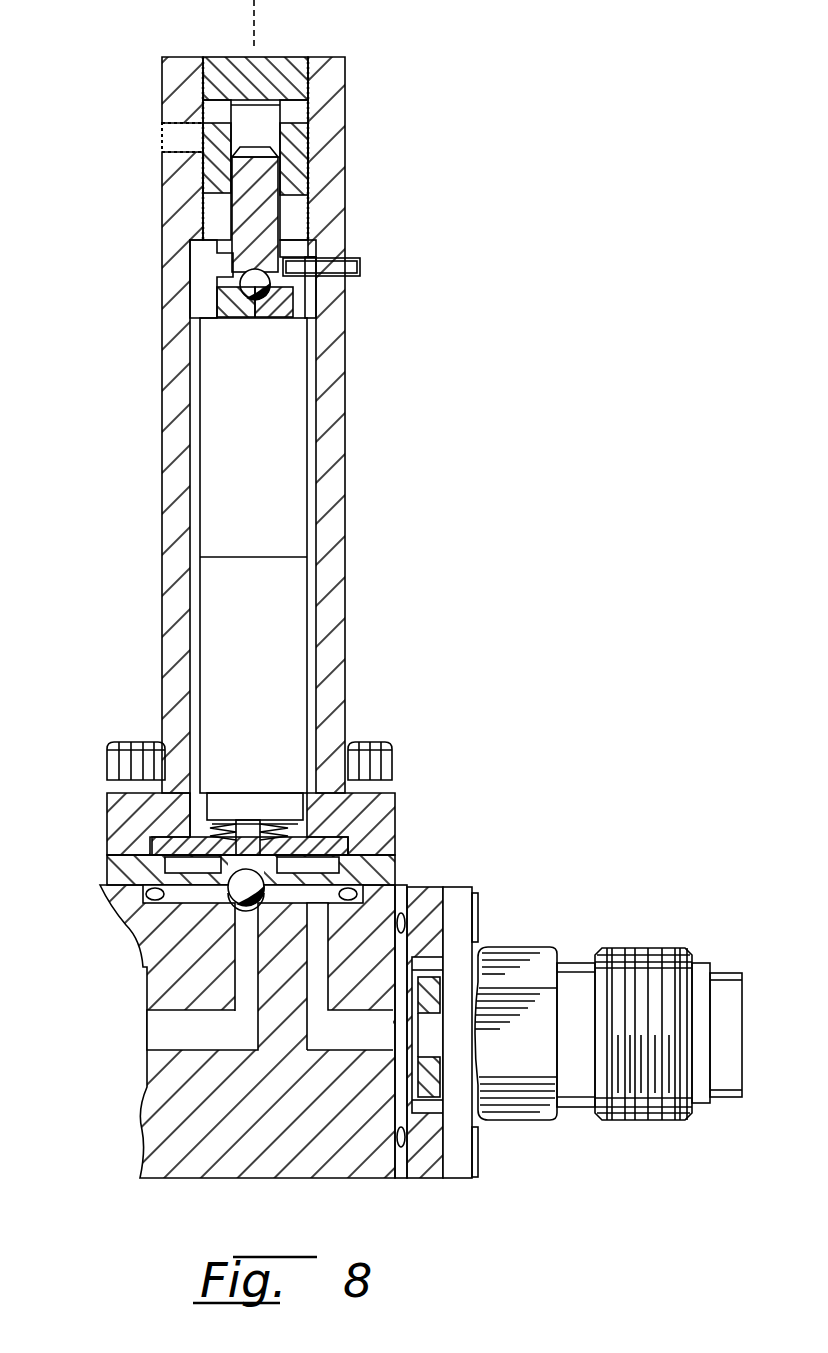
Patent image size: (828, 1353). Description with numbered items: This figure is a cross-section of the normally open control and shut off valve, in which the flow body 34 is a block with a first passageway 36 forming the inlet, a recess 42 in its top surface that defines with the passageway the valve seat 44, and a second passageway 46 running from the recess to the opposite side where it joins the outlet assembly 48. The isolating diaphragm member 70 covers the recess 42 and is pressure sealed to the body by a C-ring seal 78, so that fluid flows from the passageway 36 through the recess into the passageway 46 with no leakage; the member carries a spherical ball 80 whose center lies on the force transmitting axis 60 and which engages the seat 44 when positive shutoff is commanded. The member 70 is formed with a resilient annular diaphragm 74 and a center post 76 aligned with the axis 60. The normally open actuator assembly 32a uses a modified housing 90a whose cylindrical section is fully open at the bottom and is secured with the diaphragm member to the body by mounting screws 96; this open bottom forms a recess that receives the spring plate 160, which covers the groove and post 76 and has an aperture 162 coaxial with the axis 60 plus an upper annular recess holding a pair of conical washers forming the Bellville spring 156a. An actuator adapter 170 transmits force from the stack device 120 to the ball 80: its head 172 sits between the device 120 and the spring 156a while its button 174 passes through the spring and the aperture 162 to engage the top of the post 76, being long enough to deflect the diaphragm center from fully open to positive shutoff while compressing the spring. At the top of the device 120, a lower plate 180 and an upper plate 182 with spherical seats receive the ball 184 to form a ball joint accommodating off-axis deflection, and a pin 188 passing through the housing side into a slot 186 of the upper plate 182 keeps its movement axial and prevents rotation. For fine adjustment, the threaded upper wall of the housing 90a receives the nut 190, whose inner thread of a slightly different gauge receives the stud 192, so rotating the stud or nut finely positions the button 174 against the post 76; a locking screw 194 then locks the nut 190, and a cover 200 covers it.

The normally open control valve actuator assembly 32a is at (354, 485).
The flow body 34 is at (146, 1137).
The first passageway 36 is at (173, 1043).
The recess 42 is at (236, 893).
The valve seat 44 is at (260, 906).
The second passageway 46 is at (355, 1047).
The outlet assembly 48 is at (637, 952).
The force transmitting axis 60 is at (254, 14).
The isolating diaphragm member 70 is at (406, 868).
The resilient annular diaphragm 74 is at (170, 880).
The center post 76 is at (398, 855).
The C-ring seal 78 is at (228, 885).
The spherical ball 80 is at (226, 888).
The housing 90a is at (354, 668).
The mounting screws 96 is at (131, 750).
The device 120 is at (271, 647).
The Bellville spring 156a is at (258, 826).
The spring plate 160 is at (338, 843).
The aperture 162 is at (160, 838).
The actuator adapter 170 is at (198, 803).
The head 172 is at (247, 793).
The button 174 is at (268, 828).
The lower plate 180 is at (216, 300).
The upper plate 182 is at (208, 262).
The ball 184 is at (248, 297).
The slot 186 is at (312, 248).
The pin 188 is at (350, 262).
The nut 190 is at (310, 152).
The stud 192 is at (272, 215).
The locking screw 194 is at (168, 138).
The cover 200 is at (278, 64).